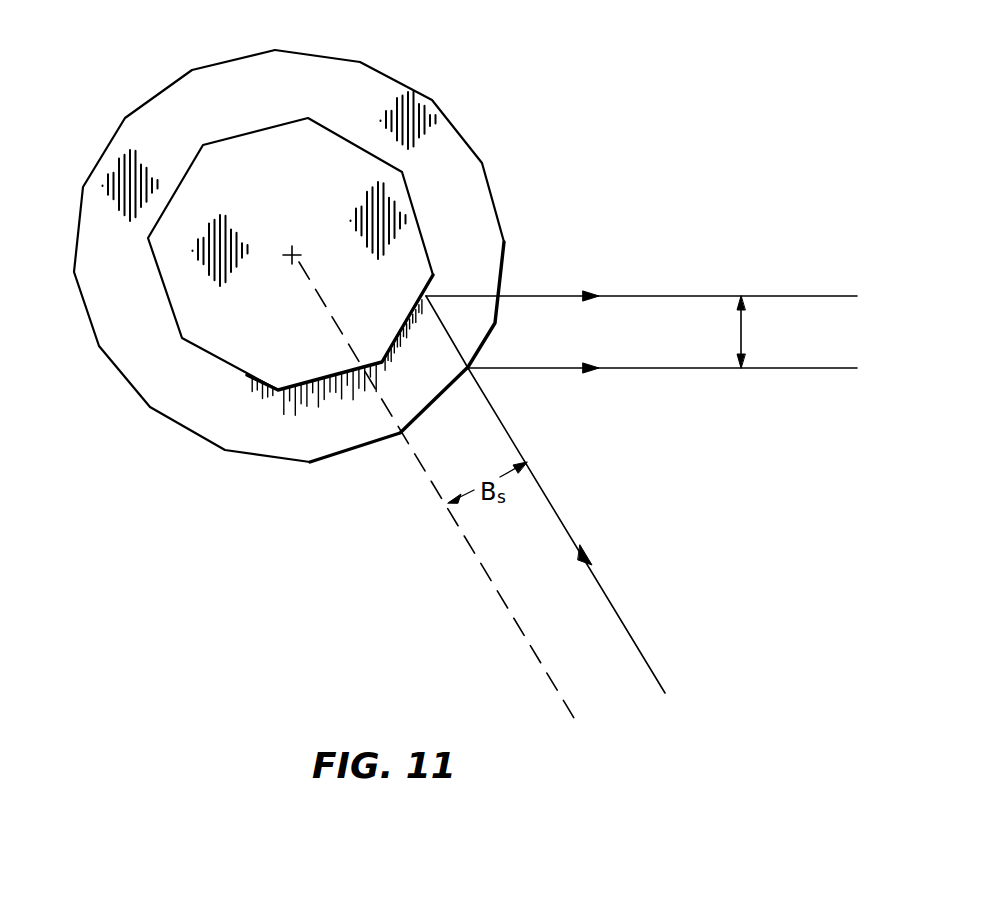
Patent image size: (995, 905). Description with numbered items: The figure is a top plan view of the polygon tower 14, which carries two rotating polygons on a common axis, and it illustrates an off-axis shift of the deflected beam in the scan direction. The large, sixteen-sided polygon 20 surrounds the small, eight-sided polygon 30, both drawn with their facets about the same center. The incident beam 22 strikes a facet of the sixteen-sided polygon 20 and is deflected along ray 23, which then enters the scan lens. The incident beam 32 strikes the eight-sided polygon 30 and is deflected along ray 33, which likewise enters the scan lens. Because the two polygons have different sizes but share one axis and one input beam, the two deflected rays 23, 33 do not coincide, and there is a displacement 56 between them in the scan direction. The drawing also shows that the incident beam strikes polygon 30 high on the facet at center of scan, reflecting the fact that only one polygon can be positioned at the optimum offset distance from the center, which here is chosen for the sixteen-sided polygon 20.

The polygon tower 14 is at (505, 108).
The sixteen sided polygon 20 is at (90, 320).
The eight sided polygon 30 is at (244, 376).
The incident beam 32 is at (450, 335).
The incident beam 22 is at (647, 657).
The ray 33 is at (689, 270).
The ray 23 is at (688, 372).
The displacement 56 is at (743, 340).